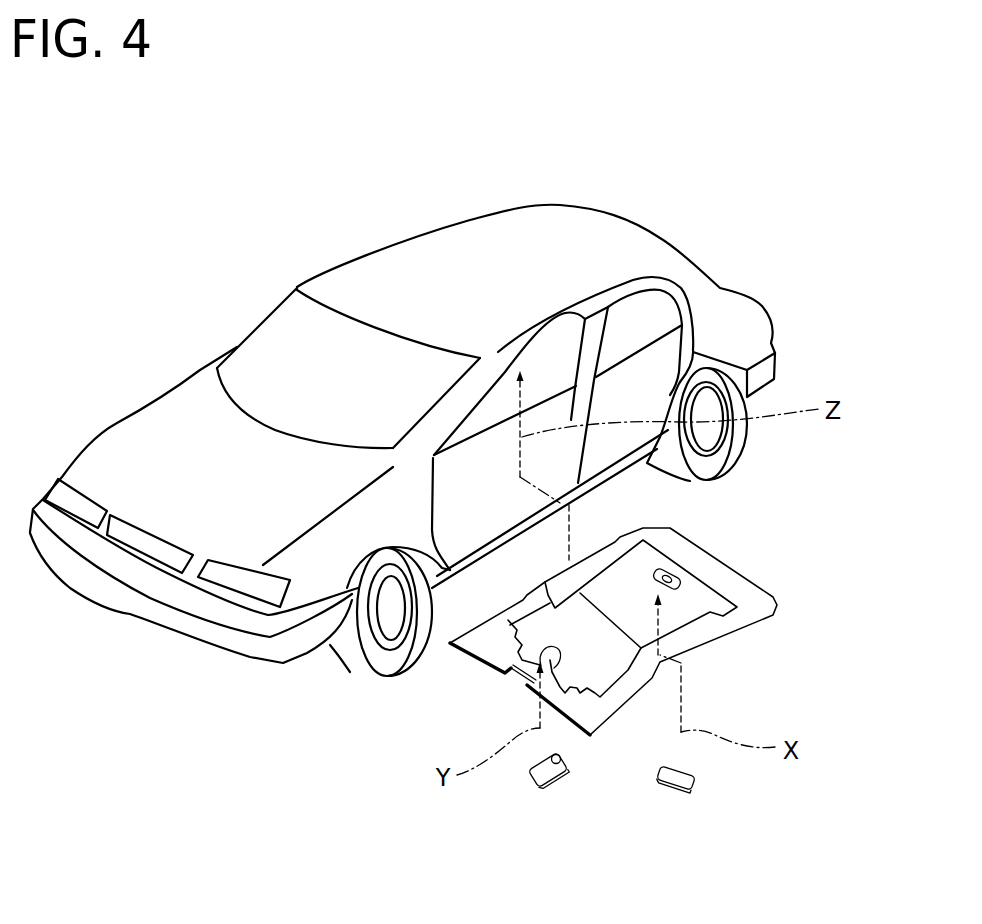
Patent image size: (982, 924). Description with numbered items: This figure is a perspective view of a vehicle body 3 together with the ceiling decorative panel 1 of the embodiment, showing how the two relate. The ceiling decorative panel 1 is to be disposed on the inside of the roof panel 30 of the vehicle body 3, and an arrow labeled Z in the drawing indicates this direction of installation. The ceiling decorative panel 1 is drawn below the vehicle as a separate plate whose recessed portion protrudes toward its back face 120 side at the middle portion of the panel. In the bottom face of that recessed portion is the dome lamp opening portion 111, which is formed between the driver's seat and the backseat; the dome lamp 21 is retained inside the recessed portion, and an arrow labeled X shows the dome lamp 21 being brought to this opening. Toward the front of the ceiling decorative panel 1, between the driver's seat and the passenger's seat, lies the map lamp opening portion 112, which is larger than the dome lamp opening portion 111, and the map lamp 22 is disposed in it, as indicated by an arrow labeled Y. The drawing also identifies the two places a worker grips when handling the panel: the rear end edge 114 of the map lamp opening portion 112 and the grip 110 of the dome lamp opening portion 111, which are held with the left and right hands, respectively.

The ceiling decorative panel 1 is at (595, 701).
The vehicle body 3 is at (367, 282).
The roof panel 30 is at (462, 267).
The grip 110 is at (747, 619).
The dome lamp opening portion 111 is at (678, 567).
The map lamp opening portion 112 is at (514, 669).
The rear end edge 114 is at (545, 658).
The back face 120 is at (668, 613).
The dome lamp 21 is at (692, 778).
The map lamp 22 is at (550, 787).